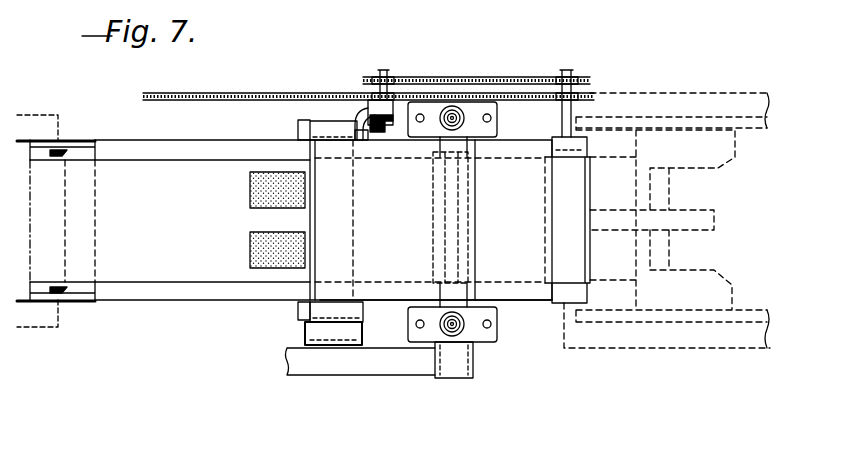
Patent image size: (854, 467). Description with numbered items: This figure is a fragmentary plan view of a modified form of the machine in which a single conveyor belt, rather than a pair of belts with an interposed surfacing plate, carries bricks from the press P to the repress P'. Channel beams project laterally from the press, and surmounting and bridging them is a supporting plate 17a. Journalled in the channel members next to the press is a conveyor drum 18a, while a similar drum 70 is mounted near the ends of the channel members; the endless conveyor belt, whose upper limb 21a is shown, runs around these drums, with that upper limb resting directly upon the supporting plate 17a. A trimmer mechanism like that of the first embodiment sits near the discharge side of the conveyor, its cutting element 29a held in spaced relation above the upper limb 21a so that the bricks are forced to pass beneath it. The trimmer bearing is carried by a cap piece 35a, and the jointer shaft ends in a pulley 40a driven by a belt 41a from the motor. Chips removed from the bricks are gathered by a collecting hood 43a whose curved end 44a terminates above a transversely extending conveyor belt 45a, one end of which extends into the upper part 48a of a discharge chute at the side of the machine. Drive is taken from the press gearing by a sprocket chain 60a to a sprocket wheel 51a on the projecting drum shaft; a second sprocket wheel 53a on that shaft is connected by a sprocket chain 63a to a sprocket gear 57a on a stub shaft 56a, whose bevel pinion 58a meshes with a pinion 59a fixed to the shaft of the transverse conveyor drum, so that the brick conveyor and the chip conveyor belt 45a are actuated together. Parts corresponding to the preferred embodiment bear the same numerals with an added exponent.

The supporting plate 17a is at (213, 290).
The conveyor drum 18a is at (65, 195).
The upper limb of endless conveyor belt 21a is at (170, 283).
The cutting element 29a is at (462, 218).
The cap piece 35a is at (486, 334).
The pulley 40a is at (468, 377).
The belt 41a is at (360, 363).
The collecting hood 43a is at (400, 290).
The curved end of hood 44a is at (315, 215).
The conveyor belt 45a is at (310, 163).
The upper part of discharge chute 48a is at (322, 332).
The sprocket wheel 51a is at (583, 93).
The sprocket wheel 53a is at (583, 77).
The stub shaft 56a is at (383, 70).
The sprocket gear 57a is at (392, 78).
The bevel pinion 58a is at (390, 117).
The pinion 59a is at (382, 131).
The sprocket chain 60a is at (264, 93).
The sprocket chain 63a is at (514, 77).
The drum 70 is at (543, 227).
The press P is at (56, 253).
The repress P' is at (667, 252).